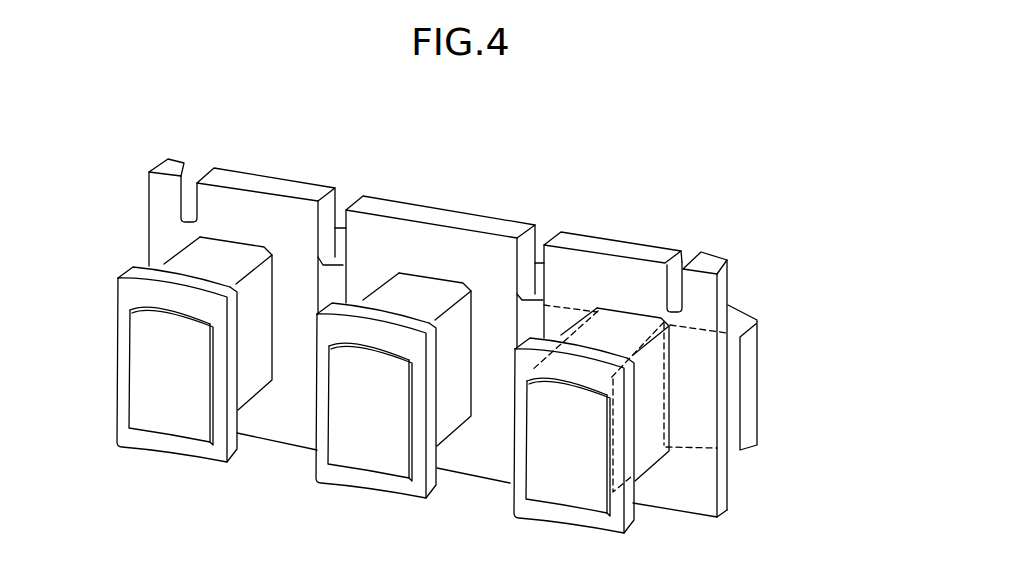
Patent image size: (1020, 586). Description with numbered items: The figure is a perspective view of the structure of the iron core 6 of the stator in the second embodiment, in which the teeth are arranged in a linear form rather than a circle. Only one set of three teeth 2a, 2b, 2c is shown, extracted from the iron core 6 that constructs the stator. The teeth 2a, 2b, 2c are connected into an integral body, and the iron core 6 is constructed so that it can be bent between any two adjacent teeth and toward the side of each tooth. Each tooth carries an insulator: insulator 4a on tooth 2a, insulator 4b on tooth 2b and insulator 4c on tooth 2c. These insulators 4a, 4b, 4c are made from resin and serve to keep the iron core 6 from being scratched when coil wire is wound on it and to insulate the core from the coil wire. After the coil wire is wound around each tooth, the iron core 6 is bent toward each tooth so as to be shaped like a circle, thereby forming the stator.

The tooth 2a is at (641, 208).
The tooth 2b is at (439, 168).
The tooth 2c is at (237, 129).
The insulator 4a is at (707, 262).
The insulator 4b is at (492, 224).
The insulator 4c is at (294, 186).
The iron core 6 is at (747, 370).